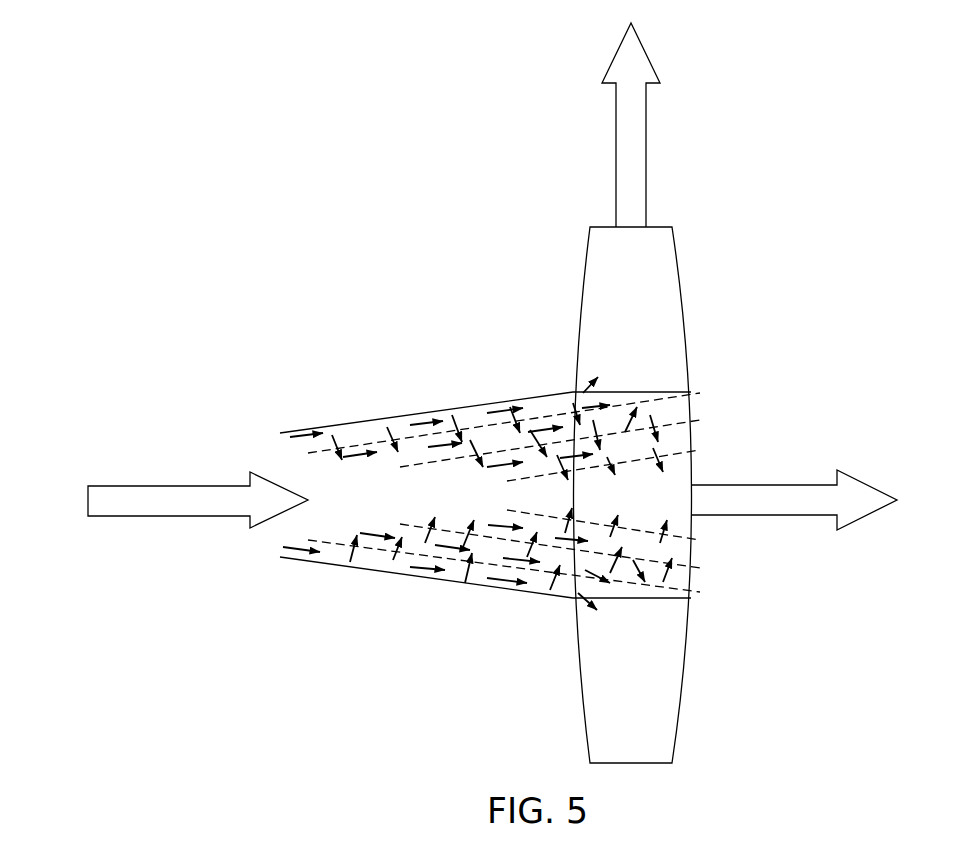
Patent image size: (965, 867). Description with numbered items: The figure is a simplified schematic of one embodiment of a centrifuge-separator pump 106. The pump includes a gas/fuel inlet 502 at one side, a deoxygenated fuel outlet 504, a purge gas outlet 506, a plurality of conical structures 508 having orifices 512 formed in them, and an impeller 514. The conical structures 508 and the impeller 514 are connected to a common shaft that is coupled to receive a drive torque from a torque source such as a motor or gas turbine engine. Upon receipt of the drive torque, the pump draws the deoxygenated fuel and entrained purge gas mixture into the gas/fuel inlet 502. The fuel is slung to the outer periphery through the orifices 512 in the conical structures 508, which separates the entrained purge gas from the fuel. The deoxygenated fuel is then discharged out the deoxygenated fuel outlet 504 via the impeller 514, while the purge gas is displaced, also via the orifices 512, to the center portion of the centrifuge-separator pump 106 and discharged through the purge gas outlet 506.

The centrifuge-separator pump 106 is at (862, 272).
The gas/fuel inlet 502 is at (290, 463).
The deoxygenated fuel outlet 504 is at (667, 227).
The purge gas outlet 506 is at (695, 480).
The conical structures 508 is at (700, 393).
The orifices 512 is at (482, 422).
The impeller 514 is at (681, 293).